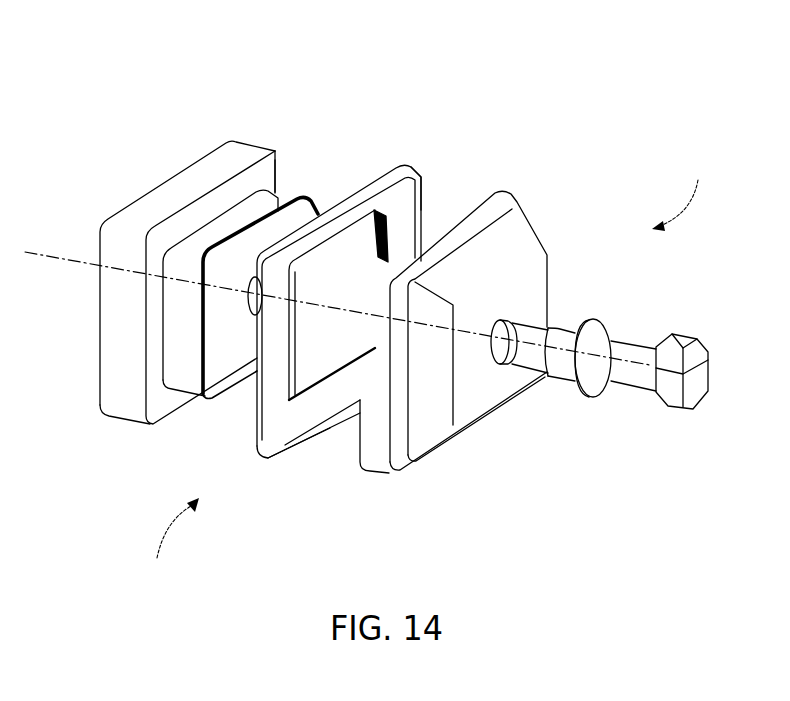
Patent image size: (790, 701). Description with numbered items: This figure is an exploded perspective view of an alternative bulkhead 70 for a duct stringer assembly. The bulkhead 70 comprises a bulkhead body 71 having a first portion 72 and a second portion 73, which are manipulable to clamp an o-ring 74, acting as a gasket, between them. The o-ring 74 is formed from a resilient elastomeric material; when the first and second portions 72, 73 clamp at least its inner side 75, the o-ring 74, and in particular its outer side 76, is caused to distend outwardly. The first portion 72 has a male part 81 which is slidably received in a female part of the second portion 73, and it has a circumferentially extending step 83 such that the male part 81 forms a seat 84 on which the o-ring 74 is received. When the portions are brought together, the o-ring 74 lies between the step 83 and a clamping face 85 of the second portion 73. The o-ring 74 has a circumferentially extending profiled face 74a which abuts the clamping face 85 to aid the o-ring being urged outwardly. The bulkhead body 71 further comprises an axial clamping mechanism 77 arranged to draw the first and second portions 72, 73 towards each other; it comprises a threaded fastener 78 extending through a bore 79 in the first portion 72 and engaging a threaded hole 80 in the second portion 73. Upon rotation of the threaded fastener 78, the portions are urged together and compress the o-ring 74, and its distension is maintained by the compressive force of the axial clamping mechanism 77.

The bulkhead 70 is at (333, 94).
The bulkhead body 71 is at (170, 547).
The first portion 72 is at (268, 148).
The second portion 73 is at (496, 196).
The o-ring 74 is at (382, 172).
The profiled face 74a is at (428, 200).
The inner side 75 is at (322, 400).
The outer side 76 is at (307, 451).
The axial clamping mechanism 77 is at (685, 190).
The threaded fastener 78 is at (641, 350).
The bore 79 is at (516, 318).
The threaded hole 80 is at (254, 316).
The male part 81 is at (279, 183).
The step 83 is at (160, 424).
The seat 84 is at (178, 330).
The clamping face 85 is at (358, 448).